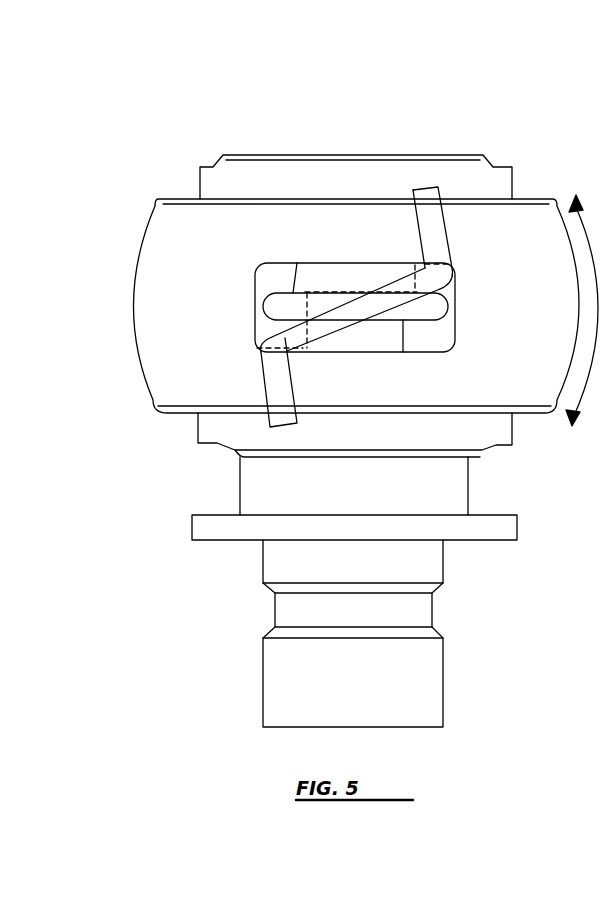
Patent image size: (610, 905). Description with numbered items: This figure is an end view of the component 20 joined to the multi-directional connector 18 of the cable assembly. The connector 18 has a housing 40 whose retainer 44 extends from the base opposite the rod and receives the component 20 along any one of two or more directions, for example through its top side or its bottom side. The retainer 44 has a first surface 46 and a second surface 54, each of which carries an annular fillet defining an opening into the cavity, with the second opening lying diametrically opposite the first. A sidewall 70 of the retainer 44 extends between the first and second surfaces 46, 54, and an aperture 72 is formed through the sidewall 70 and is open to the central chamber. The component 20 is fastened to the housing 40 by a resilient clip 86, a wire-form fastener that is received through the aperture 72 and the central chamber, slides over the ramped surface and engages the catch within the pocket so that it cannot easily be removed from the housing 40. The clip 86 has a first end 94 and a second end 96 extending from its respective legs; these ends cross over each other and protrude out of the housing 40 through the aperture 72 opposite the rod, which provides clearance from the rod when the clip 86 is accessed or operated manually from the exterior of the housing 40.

The multi-directional connector 18 is at (156, 142).
The component 20 is at (238, 657).
The housing 40 is at (144, 191).
The retainer 44 is at (138, 250).
The first surface 46 is at (232, 155).
The second surface 54 is at (235, 459).
The sidewall 70 is at (528, 321).
The aperture 72 is at (452, 322).
The resilient clip 86 is at (248, 350).
The first end 94 is at (427, 190).
The second end 96 is at (262, 383).